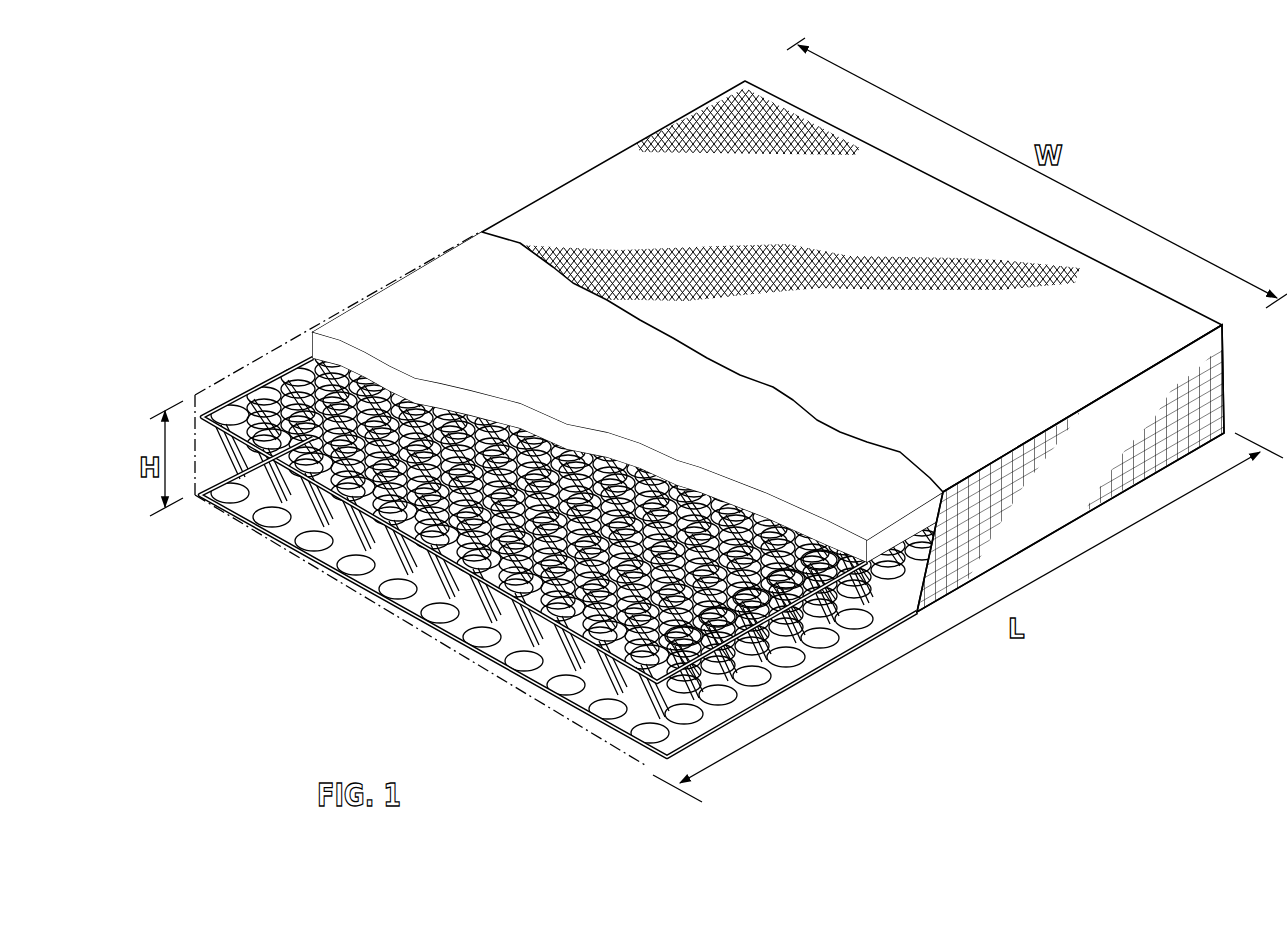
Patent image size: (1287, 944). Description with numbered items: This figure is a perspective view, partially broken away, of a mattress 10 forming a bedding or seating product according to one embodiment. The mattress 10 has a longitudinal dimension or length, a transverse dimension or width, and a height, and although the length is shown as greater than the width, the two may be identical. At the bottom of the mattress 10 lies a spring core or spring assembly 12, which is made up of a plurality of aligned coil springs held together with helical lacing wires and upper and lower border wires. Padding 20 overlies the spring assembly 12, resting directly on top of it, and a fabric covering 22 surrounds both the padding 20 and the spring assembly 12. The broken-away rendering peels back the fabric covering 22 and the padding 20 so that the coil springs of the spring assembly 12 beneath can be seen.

The mattress 10 is at (709, 423).
The spring assembly 12 is at (288, 548).
The padding 20 is at (702, 427).
The fabric covering 22 is at (862, 368).